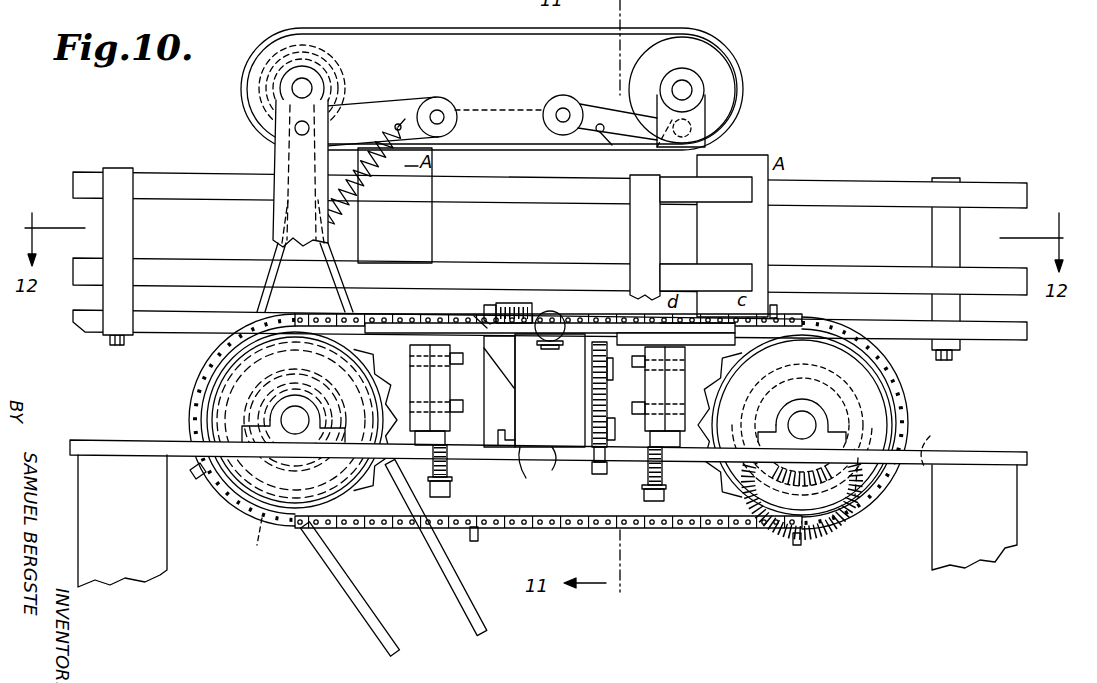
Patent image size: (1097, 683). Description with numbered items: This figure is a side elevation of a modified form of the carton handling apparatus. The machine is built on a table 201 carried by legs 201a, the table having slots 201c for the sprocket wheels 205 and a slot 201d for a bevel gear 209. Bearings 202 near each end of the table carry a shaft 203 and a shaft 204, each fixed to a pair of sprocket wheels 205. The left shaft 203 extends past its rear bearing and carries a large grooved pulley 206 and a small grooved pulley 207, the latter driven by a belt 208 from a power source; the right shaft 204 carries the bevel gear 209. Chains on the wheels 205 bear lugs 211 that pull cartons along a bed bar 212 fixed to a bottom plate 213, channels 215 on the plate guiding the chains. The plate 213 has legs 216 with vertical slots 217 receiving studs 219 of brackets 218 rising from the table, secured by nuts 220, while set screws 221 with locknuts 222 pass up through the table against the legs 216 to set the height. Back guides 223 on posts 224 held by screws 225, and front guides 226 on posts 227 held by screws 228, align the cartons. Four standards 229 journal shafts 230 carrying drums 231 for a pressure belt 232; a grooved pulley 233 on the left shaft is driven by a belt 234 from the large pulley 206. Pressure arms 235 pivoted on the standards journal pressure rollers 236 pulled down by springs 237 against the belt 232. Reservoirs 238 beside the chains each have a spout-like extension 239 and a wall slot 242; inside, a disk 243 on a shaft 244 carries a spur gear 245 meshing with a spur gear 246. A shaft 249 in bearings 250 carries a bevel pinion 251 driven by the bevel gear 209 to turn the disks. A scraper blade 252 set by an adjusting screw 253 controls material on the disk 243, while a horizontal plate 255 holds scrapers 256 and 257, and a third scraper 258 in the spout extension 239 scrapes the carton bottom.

The table 201 is at (992, 444).
The legs 201a is at (168, 578).
The slots 201c is at (943, 438).
The slot 201d is at (862, 493).
The bearings 202 is at (282, 420).
The shaft 203 is at (300, 410).
The shaft 204 is at (812, 410).
The sprocket wheels 205 is at (196, 372).
The large grooved pulley 206 is at (256, 536).
The small grooved pulley 207 is at (198, 410).
The belt 208 is at (340, 592).
The bevel gear 209 is at (825, 380).
The lugs 211 is at (436, 300).
The bed bar 212 is at (1010, 338).
The bottom plate 213 is at (742, 372).
The channels 215 is at (697, 320).
The legs 216 is at (497, 440).
The vertical slots 217 is at (405, 372).
The brackets 218 is at (434, 466).
The studs 219 is at (470, 388).
The nuts 220 is at (620, 341).
The set screws 221 is at (450, 489).
The locknuts 222 is at (452, 477).
The back guides 223 is at (836, 190).
The posts 224 is at (961, 228).
The screws 225 is at (962, 355).
The front guides 226 is at (258, 266).
The posts 227 is at (125, 250).
The screws 228 is at (124, 345).
The standards 229 is at (684, 78).
The shaft 230 is at (306, 86).
The drum 231 is at (243, 90).
The pressure belt 232 is at (448, 145).
The grooved pulley 233 is at (345, 86).
The belt 234 is at (257, 297).
The pressure arm 235 is at (438, 97).
The pressure roller 236 is at (452, 108).
The springs 237 is at (386, 172).
The reservoirs 238 is at (575, 492).
The spout-like extension 239 is at (505, 392).
The horizontal slot 242 is at (595, 375).
The disk 243 is at (560, 312).
The shaft 244 is at (550, 390).
The spur gear 245 is at (607, 345).
The spur gear 246 is at (599, 476).
The shaft 249 is at (740, 392).
The bearings 250 is at (770, 490).
The bevel pinion 251 is at (795, 350).
The scraper blade 252 is at (556, 352).
The adjusting screw 253 is at (549, 348).
The horizontal plate 255 is at (502, 361).
The scraper 256 is at (522, 302).
The scraper 257 is at (506, 300).
The third scraper 258 is at (488, 304).